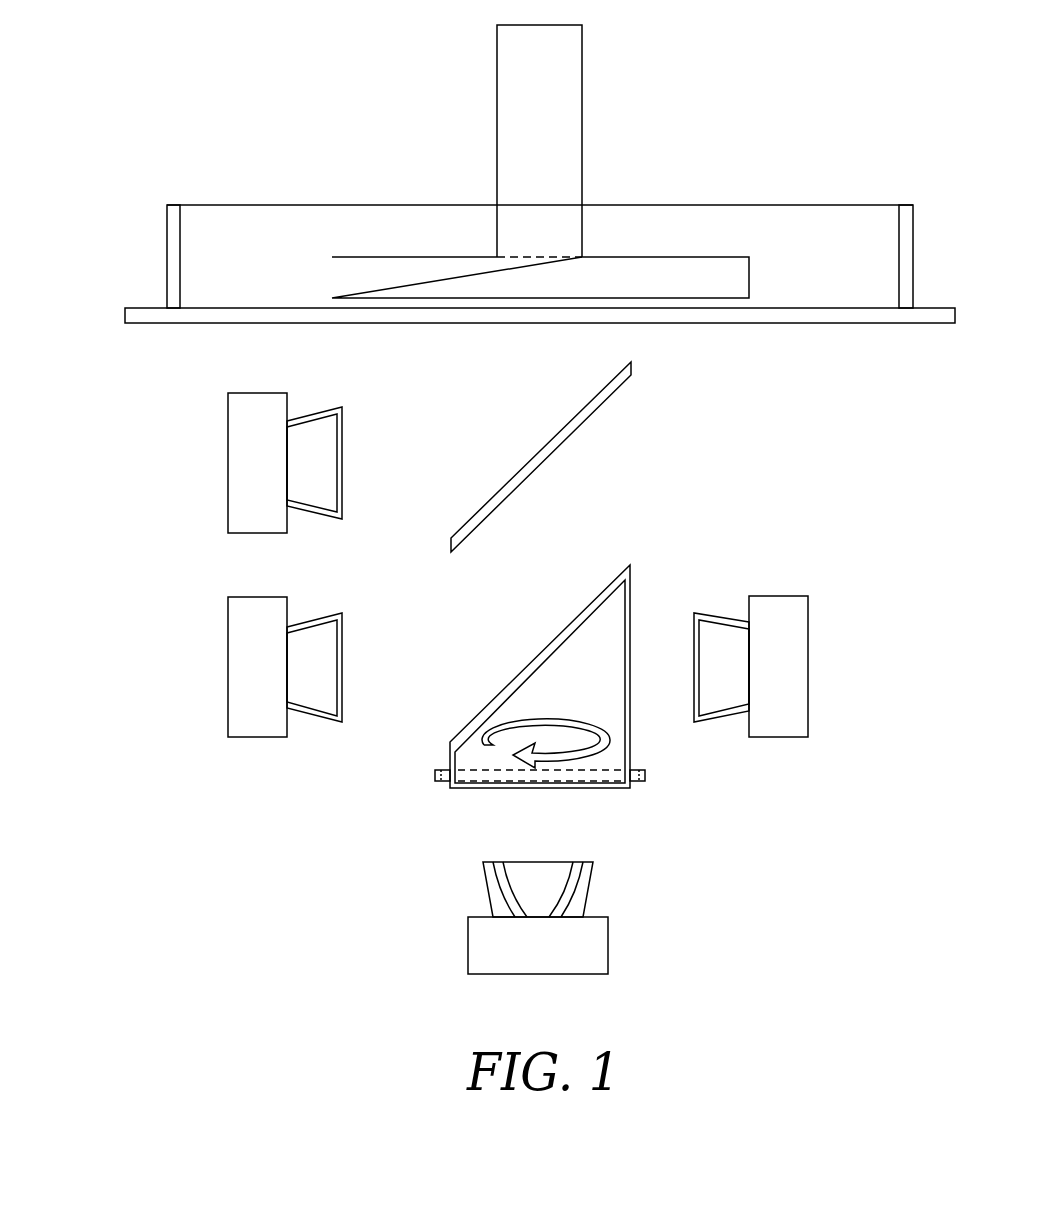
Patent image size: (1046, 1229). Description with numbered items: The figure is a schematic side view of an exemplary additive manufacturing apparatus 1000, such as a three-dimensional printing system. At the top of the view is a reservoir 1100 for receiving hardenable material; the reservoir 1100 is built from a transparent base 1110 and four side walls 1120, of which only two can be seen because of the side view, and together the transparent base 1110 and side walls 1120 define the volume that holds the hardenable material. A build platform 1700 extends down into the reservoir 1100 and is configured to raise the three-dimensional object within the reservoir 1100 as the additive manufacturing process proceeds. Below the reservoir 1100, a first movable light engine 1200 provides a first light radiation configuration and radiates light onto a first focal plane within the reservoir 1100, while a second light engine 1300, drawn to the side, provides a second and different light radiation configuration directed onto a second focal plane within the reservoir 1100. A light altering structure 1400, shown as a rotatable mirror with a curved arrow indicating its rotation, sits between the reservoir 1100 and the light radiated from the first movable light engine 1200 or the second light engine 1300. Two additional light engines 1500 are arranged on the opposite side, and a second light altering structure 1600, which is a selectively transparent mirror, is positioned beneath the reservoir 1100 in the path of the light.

The apparatus 1000 is at (272, 93).
The reservoir 1100 is at (855, 205).
The transparent base 1110 is at (873, 316).
The side walls 1120 is at (167, 252).
The first movable light engine 1200 is at (596, 940).
The second light engine 1300 is at (793, 655).
The light altering structure 1400 is at (458, 775).
The additional light engines 1500 is at (246, 492).
The second light altering structure 1600 is at (590, 410).
The build platform 1700 is at (560, 98).